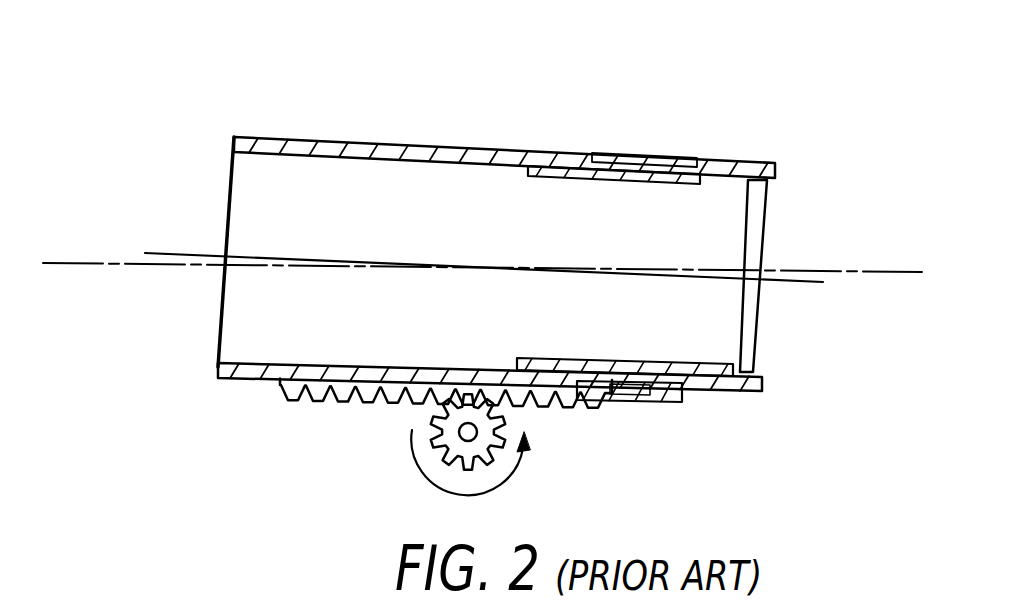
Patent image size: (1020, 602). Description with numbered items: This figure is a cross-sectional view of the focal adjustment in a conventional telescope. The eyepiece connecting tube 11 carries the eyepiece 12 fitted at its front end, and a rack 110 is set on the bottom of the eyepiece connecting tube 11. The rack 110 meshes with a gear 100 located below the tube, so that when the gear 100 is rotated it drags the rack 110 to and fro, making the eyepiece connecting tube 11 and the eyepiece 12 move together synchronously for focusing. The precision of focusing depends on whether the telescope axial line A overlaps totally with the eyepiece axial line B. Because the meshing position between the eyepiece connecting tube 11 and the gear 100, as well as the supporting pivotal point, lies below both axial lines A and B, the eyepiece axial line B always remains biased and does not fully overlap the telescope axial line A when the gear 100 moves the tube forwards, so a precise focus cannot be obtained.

The eyepiece connecting tube 11 is at (365, 140).
The eyepiece 12 is at (748, 315).
The gear 100 is at (493, 417).
The rack 110 is at (340, 400).
The telescope axial line A is at (78, 265).
The eyepiece axial line B is at (177, 253).